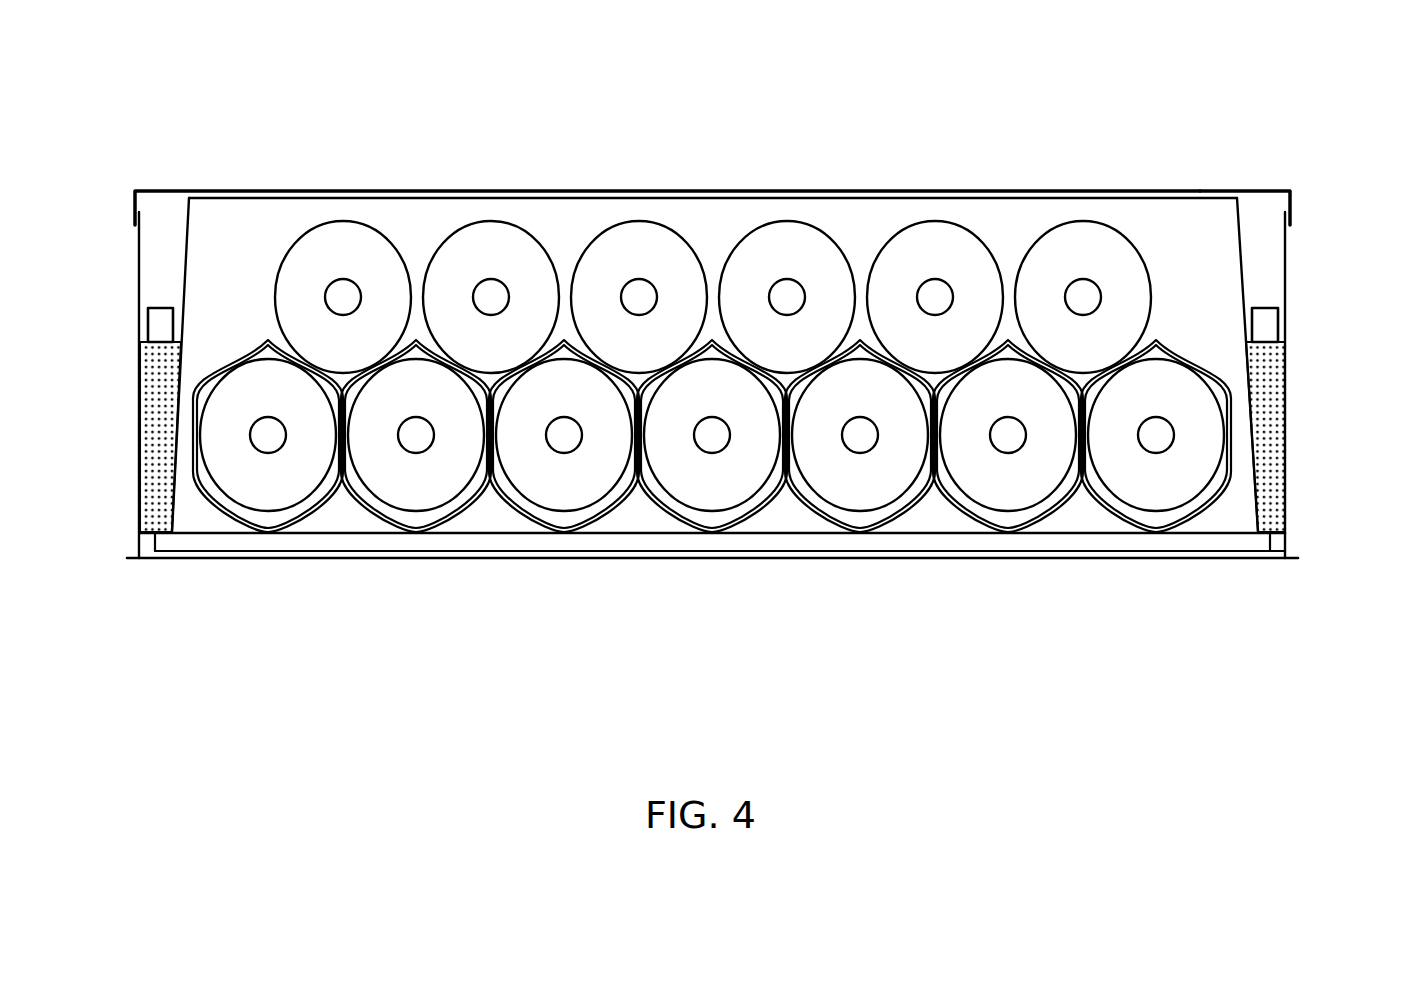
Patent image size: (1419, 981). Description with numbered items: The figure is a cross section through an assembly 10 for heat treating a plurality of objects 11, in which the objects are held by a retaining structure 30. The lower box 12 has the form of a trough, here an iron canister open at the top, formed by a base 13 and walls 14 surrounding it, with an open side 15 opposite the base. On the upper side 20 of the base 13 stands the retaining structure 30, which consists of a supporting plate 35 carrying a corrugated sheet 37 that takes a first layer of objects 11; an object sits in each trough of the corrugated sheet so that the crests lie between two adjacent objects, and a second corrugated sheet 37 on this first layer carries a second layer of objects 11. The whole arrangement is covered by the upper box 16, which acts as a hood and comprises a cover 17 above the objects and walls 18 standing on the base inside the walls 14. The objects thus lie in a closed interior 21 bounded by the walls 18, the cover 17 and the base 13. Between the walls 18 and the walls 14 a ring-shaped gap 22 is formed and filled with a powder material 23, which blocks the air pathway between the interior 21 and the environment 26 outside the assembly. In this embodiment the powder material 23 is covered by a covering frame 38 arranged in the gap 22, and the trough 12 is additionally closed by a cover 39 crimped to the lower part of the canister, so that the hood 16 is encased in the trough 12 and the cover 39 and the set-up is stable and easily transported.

The assembly 10 is at (222, 162).
The object 11 is at (343, 237).
The lower box 12 is at (1299, 541).
The base 13 is at (710, 557).
The walls 14 is at (1287, 437).
The open side 15 is at (1266, 236).
The upper box 16 is at (175, 244).
The cover 17 is at (277, 197).
The walls 18 is at (177, 440).
The upper side 20 is at (924, 547).
The interior 21 is at (730, 235).
The gap 22 is at (156, 288).
The powder material 23 is at (1268, 382).
The environment 26 is at (990, 100).
The retaining structure 30 is at (1176, 283).
The supporting plate 35 is at (535, 541).
The corrugated sheet 37 is at (228, 354).
The covering frame 38 is at (1265, 327).
The cover 39 is at (1260, 192).